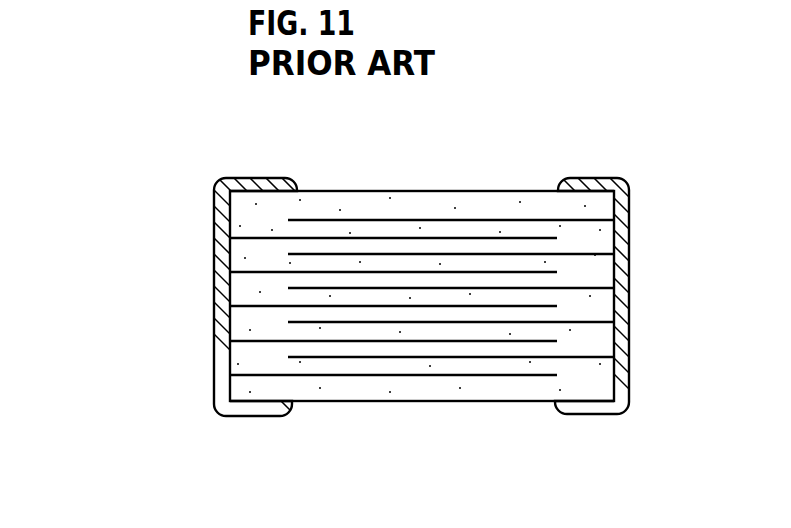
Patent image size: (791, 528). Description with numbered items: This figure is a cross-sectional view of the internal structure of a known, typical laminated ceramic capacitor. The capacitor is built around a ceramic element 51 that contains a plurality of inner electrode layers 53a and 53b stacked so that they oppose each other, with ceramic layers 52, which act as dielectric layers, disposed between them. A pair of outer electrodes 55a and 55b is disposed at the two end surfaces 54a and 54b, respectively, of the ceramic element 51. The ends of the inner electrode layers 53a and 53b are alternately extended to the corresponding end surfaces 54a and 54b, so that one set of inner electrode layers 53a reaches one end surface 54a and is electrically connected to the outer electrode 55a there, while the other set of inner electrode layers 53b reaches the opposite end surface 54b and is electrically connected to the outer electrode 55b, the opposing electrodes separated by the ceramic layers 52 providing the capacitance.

The ceramic element 51 is at (436, 184).
The ceramic layers 52 is at (524, 229).
The inner electrode layers 53a is at (356, 272).
The inner electrode layers 53b is at (483, 321).
The end surface 54a is at (226, 255).
The end surface 54b is at (618, 235).
The outer electrode 55a is at (213, 332).
The outer electrode 55b is at (630, 297).